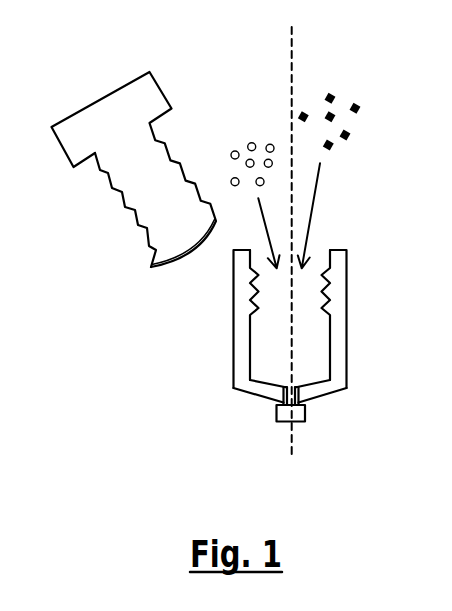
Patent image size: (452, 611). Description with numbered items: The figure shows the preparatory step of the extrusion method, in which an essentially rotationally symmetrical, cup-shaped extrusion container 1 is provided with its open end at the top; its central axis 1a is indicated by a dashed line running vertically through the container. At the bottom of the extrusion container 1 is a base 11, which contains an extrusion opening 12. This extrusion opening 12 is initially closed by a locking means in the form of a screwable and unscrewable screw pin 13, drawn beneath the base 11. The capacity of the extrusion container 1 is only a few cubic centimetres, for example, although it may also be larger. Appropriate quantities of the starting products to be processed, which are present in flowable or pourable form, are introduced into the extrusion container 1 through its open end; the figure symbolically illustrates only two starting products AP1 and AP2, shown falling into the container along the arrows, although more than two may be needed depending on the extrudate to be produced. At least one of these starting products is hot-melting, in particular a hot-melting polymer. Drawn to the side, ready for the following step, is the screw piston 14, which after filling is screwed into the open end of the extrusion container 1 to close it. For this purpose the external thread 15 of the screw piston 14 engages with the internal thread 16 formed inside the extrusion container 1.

The extrusion container 1 is at (260, 378).
The axis of the extrusion container 1a is at (290, 62).
The base 11 is at (318, 391).
The extrusion opening 12 is at (281, 396).
The screw pin 13 is at (297, 418).
The screw piston 14 is at (134, 183).
The external thread 15 is at (130, 231).
The internal thread 16 is at (256, 302).
The starting product AP1 is at (261, 175).
The starting product AP2 is at (360, 112).